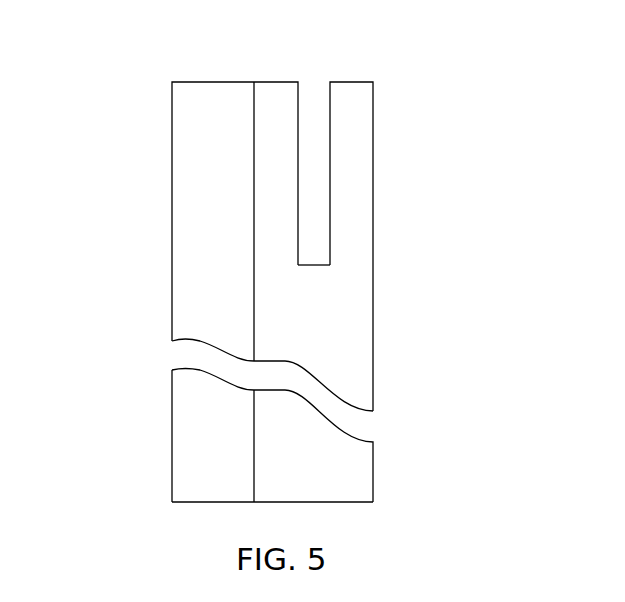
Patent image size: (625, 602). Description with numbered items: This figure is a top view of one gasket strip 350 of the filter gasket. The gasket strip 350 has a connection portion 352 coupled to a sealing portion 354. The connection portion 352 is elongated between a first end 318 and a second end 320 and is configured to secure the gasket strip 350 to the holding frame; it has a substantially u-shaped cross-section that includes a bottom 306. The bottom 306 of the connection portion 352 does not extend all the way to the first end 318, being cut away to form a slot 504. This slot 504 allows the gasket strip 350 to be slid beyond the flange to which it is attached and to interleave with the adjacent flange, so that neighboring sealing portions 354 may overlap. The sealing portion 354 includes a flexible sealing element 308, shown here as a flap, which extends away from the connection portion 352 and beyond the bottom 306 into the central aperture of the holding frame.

The gasket strip 350 is at (160, 242).
The sealing element 308 is at (200, 92).
The first end 318 is at (275, 92).
The bottom 306 is at (353, 93).
The slot 504 is at (330, 217).
The sealing portion 354 is at (185, 155).
The connection portion 352 is at (353, 348).
The second end 320 is at (352, 503).